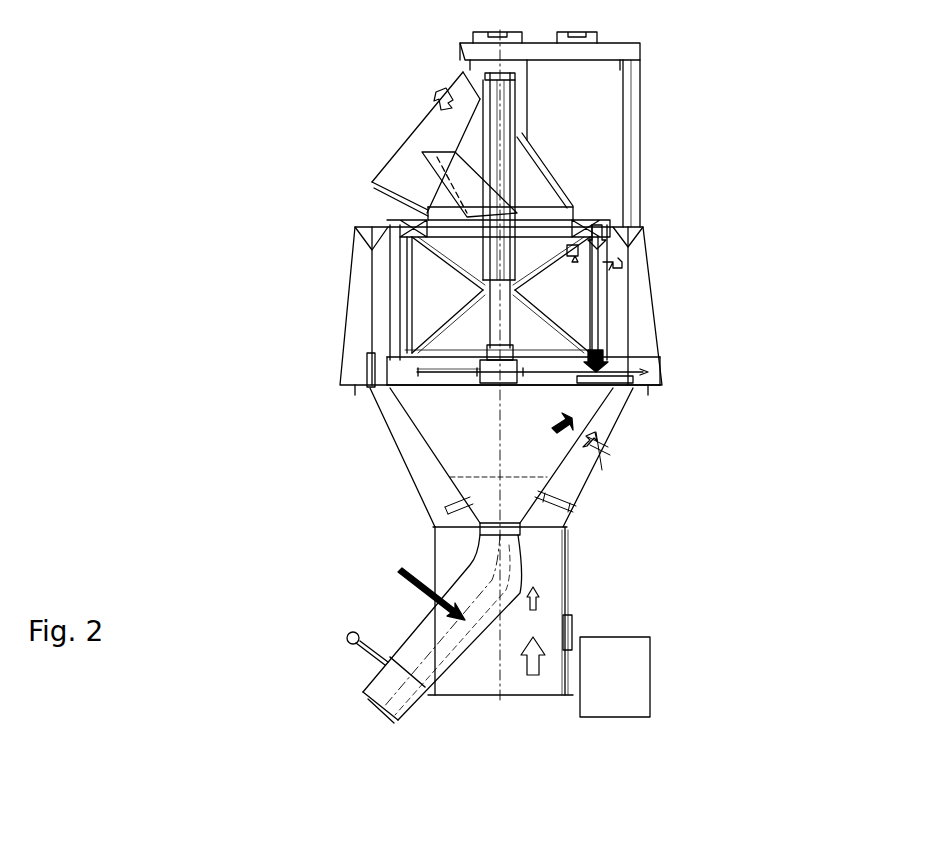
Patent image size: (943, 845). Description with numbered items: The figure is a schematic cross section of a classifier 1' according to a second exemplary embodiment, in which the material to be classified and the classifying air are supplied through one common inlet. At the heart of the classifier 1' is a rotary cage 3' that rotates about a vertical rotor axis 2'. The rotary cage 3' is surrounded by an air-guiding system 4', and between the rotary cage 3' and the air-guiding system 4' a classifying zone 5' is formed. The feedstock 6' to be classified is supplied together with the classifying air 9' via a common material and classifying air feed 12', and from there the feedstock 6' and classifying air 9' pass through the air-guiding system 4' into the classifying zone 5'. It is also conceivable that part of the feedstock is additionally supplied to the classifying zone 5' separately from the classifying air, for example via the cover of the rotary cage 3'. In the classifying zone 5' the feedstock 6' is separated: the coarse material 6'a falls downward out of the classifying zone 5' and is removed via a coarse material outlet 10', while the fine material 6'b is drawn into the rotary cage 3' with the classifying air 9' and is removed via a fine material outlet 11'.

The classifier 1' is at (638, 129).
The vertical rotor axis 2' is at (602, 221).
The rotary cage 3' is at (447, 302).
The air-guiding system 4' is at (464, 311).
The classifying zone 5' is at (440, 295).
The feedstock 6' is at (583, 599).
The coarse material 6'a is at (413, 585).
The fine material 6'b is at (437, 61).
The classifying air 9' is at (585, 677).
The coarse material outlet 10' is at (387, 629).
The fine material outlet 11' is at (435, 146).
The common material and classifying air feed 12' is at (501, 570).